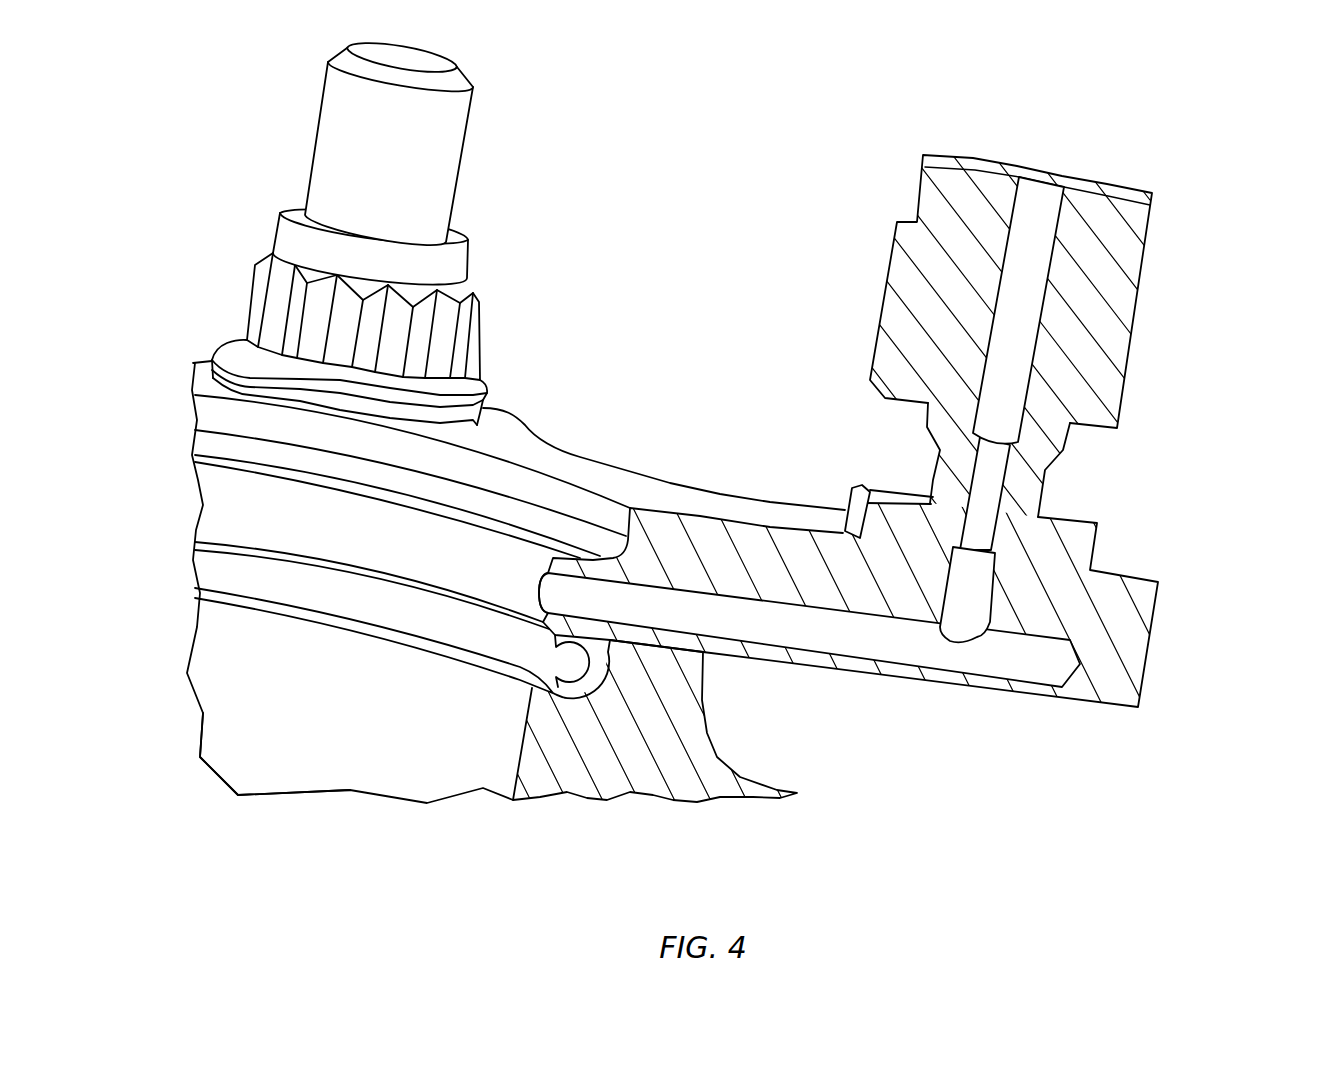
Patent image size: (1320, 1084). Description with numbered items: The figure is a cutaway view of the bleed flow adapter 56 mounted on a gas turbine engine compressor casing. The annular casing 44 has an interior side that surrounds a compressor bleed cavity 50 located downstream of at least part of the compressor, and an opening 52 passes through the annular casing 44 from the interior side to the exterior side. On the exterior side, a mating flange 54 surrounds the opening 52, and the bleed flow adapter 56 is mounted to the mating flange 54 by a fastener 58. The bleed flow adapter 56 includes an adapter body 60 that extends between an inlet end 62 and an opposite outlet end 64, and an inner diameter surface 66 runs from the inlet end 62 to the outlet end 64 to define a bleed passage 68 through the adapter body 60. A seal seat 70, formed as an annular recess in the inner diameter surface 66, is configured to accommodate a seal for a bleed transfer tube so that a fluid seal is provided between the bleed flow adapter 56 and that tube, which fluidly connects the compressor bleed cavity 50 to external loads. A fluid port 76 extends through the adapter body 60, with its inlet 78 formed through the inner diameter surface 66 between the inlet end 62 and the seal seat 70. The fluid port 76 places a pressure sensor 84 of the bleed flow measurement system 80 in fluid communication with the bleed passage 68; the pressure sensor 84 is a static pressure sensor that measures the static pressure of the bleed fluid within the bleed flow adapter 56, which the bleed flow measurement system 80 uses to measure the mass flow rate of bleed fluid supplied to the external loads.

The annular casing 44 is at (648, 813).
The compressor bleed cavity 50 is at (298, 866).
The opening 52 is at (247, 763).
The mating flange 54 is at (555, 780).
The bleed flow adapter 56 is at (823, 117).
The fastener 58 is at (440, 173).
The adapter body 60 is at (741, 547).
The inlet end 62 is at (440, 603).
The outlet end 64 is at (613, 492).
The inner diameter surface 66 is at (340, 552).
The bleed passage 68 is at (222, 502).
The seal seat 70 is at (407, 458).
The fluid port 76 is at (885, 647).
The inlet 78 is at (546, 592).
The bleed flow measurement system 80 is at (1163, 253).
The pressure sensor 84 is at (1103, 211).